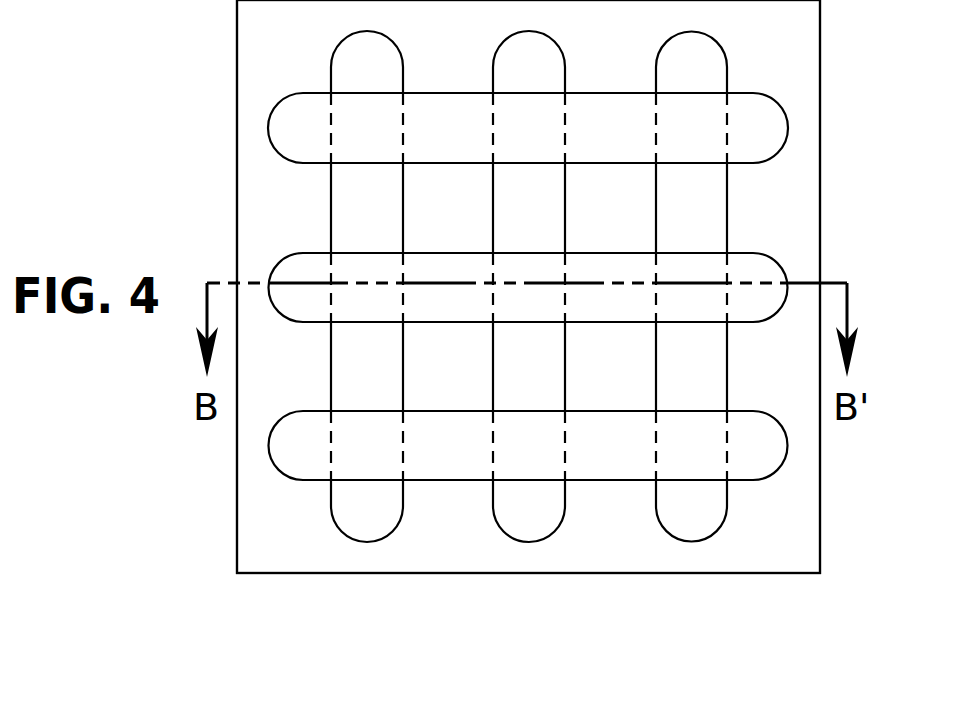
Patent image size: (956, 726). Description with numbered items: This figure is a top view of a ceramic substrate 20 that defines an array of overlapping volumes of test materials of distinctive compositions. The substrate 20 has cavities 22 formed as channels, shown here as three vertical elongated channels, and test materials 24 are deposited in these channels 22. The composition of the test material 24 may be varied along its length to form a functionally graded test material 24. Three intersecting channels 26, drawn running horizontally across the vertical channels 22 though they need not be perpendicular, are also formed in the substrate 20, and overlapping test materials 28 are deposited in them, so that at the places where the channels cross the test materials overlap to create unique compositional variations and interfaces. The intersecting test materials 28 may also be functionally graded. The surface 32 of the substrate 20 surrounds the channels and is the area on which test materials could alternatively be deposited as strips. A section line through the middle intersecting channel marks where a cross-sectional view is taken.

The substrate 20 is at (788, 573).
The cavities 22 is at (675, 540).
The test materials 24 is at (689, 518).
The intersecting channels 26 is at (452, 480).
The overlapping test materials 28 is at (362, 445).
The surface 32 is at (257, 547).